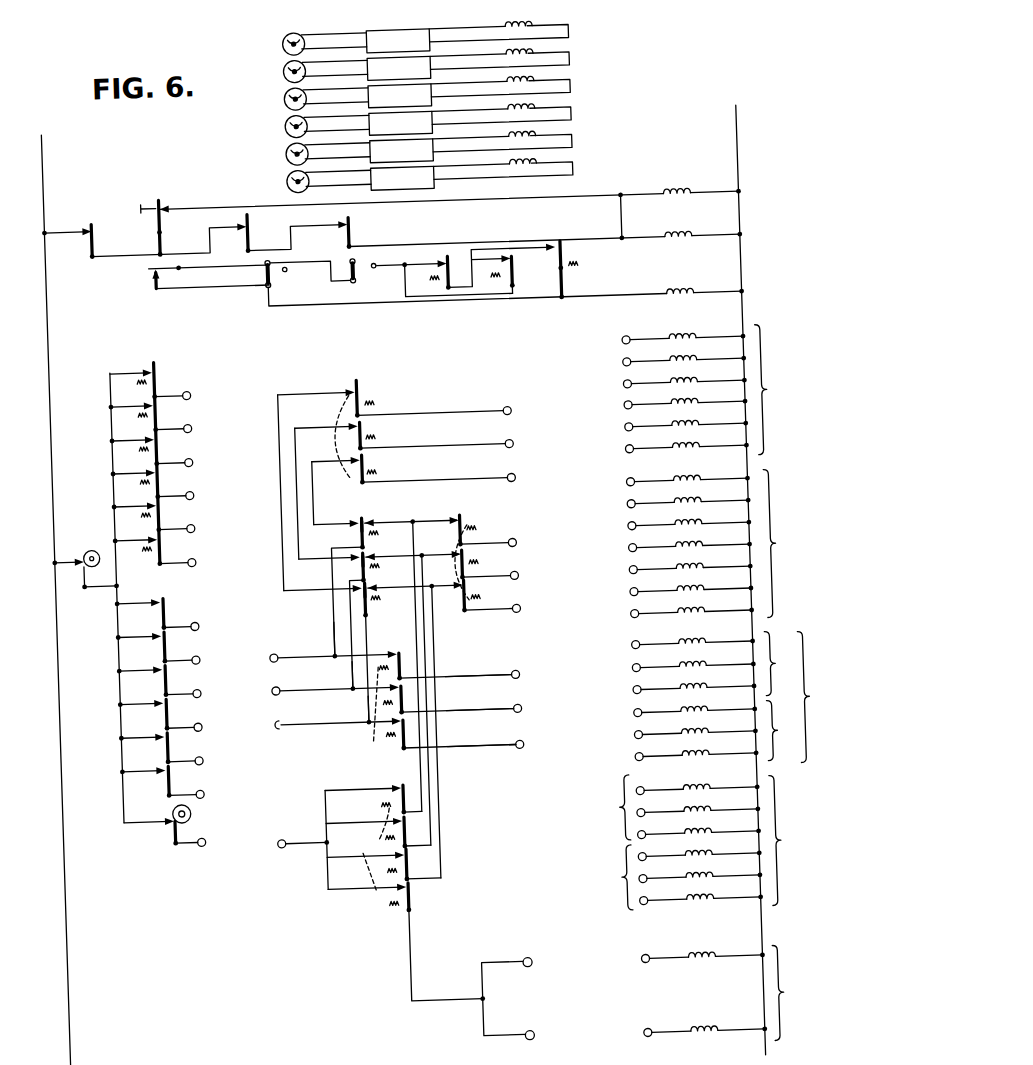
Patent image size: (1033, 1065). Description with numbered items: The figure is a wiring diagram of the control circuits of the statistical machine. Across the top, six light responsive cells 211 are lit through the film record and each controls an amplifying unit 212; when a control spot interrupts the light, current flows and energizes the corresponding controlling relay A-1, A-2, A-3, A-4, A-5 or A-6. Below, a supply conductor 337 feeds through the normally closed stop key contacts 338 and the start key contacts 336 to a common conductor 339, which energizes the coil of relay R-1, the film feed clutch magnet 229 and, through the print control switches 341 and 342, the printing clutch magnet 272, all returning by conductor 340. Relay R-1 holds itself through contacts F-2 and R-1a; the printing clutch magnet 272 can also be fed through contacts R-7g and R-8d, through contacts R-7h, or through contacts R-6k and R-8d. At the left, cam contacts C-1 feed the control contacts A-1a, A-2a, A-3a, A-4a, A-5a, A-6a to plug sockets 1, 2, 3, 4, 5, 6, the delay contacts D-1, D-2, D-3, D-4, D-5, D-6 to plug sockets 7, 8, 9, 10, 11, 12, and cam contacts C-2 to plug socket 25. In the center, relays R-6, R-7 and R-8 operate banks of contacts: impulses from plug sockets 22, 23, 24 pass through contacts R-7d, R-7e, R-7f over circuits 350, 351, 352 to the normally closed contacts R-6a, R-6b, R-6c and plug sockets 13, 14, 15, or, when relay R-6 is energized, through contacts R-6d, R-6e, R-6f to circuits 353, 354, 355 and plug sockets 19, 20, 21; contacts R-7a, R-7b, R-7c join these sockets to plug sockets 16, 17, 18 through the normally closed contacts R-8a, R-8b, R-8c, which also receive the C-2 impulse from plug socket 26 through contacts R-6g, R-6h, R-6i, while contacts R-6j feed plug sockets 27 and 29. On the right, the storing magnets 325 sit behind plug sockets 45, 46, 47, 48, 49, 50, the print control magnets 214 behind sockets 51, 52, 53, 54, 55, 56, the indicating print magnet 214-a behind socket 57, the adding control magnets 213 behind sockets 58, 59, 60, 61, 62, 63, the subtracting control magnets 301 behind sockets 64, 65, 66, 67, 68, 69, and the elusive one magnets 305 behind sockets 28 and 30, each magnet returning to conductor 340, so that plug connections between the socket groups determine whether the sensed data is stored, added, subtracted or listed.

The light responsive cells 211 is at (297, 42).
The amplifying units 212 is at (444, 31).
The controlling relay A-1 is at (544, 30).
The controlling relay A-2 is at (539, 56).
The controlling relay A-3 is at (539, 84).
The controlling relay A-4 is at (539, 111).
The controlling relay A-5 is at (539, 139).
The controlling relay A-6 is at (539, 166).
The stop key contacts 338 is at (97, 232).
The start key contacts 336 is at (170, 207).
The conductor 337 is at (53, 352).
The common conductor 339 is at (612, 195).
The conductor 340 is at (749, 266).
The print control switch 341 is at (355, 282).
The print control switch 342 is at (284, 276).
The relay R-1 is at (680, 199).
The film feed clutch magnet 229 is at (690, 241).
The clutch magnet 272 is at (682, 298).
The magnets 325 is at (692, 341).
The printing control magnets 214 is at (680, 486).
The print control magnet 214-a is at (690, 623).
The adding control magnets 213 is at (678, 650).
The subtracting control magnets 301 is at (702, 796).
The elusive one control magnet 305 is at (702, 963).
The contacts F-2 is at (254, 214).
The contacts R-1a is at (354, 217).
The contacts R-6k is at (452, 256).
The contacts R-7g is at (516, 258).
The contacts R-8d is at (569, 247).
The contacts R-7h is at (156, 263).
The relay R-6 is at (349, 441).
The relay R-7 is at (172, 250).
The relay R-8 is at (582, 265).
The control contacts A-1a is at (161, 364).
The control contacts A-2a is at (161, 400).
The control contacts A-3a is at (161, 434).
The control contacts A-4a is at (161, 467).
The control contacts A-5a is at (161, 500).
The control contacts A-6a is at (161, 534).
The cam controlled contacts C-1 is at (82, 545).
The cam controlled contacts C-2 is at (160, 811).
The delay contacts D-1 is at (158, 599).
The delay contacts D-2 is at (158, 633).
The delay contacts D-3 is at (158, 666).
The delay contacts D-4 is at (158, 700).
The delay contacts D-5 is at (158, 733).
The delay contacts D-6 is at (158, 767).
The contacts R-6a is at (360, 391).
The contacts R-6b is at (366, 427).
The contacts R-6c is at (368, 460).
The contacts R-6d is at (392, 654).
The contacts R-6e is at (398, 688).
The contacts R-6f is at (399, 722).
The contacts R-6g is at (398, 795).
The contacts R-6h is at (398, 828).
The contacts R-6i is at (399, 861).
The contacts R-6j is at (400, 895).
The contacts R-7a is at (358, 518).
The contacts R-7b is at (380, 615).
The contacts R-7c is at (374, 650).
The contacts R-7d is at (358, 527).
The contacts R-7e is at (357, 562).
The contacts R-7f is at (358, 592).
The contacts R-8a is at (458, 518).
The contacts R-8b is at (464, 556).
The contacts R-8c is at (465, 589).
The circuit 350 is at (330, 636).
The circuit 351 is at (347, 675).
The circuit 352 is at (362, 711).
The circuit 353 is at (462, 678).
The circuit 354 is at (463, 712).
The circuit 355 is at (464, 748).
The control contact plug socket 1 is at (186, 390).
The control contact plug socket 2 is at (187, 423).
The control contact plug socket 3 is at (188, 456).
The plug socket 4 is at (189, 489).
The plug socket 5 is at (190, 522).
The plug socket 6 is at (191, 556).
The plug socket 7 is at (194, 620).
The plug socket 8 is at (195, 654).
The plug socket 9 is at (197, 688).
The plug socket 10 is at (198, 721).
The plug socket 11 is at (199, 755).
The plug socket 12 is at (200, 788).
The plug socket 13 is at (507, 404).
The plug socket 14 is at (509, 437).
The plug socket 15 is at (511, 471).
The plug socket 16 is at (512, 536).
The plug socket 17 is at (514, 569).
The plug socket 18 is at (516, 602).
The plug socket 19 is at (515, 668).
The plug socket 20 is at (517, 702).
The plug socket 21 is at (519, 738).
The plug socket 22 is at (330, 651).
The plug socket 23 is at (332, 684).
The plug socket 24 is at (334, 718).
The plug socket 25 is at (200, 836).
The plug socket 26 is at (302, 838).
The plug socket 27 is at (507, 972).
The plug socket 28 is at (699, 953).
The plug socket 29 is at (509, 1019).
The plug socket 30 is at (701, 1027).
The plug socket 45 is at (680, 334).
The plug socket 46 is at (680, 356).
The plug socket 47 is at (681, 378).
The plug socket 48 is at (682, 399).
The plug socket 49 is at (682, 421).
The plug socket 50 is at (683, 443).
The printing magnet plug socket 51 is at (684, 476).
The printing magnet plug socket 52 is at (685, 498).
The printing magnet plug socket 53 is at (686, 520).
The printing magnet plug socket 54 is at (686, 542).
The printing magnet plug socket 55 is at (687, 564).
The printing magnet plug socket 56 is at (688, 586).
The plug socket 57 is at (688, 608).
The adding magnet plug socket 58 is at (689, 639).
The adding magnet plug socket 59 is at (690, 662).
The adding magnet plug socket 60 is at (691, 684).
The adding magnet plug socket 61 is at (691, 707).
The adding magnet plug socket 62 is at (692, 729).
The adding magnet plug socket 63 is at (693, 751).
The plug socket 64 is at (694, 785).
The plug socket 65 is at (695, 807).
The plug socket 66 is at (695, 829).
The plug socket 67 is at (696, 851).
The plug socket 68 is at (697, 873).
The plug socket 69 is at (697, 895).